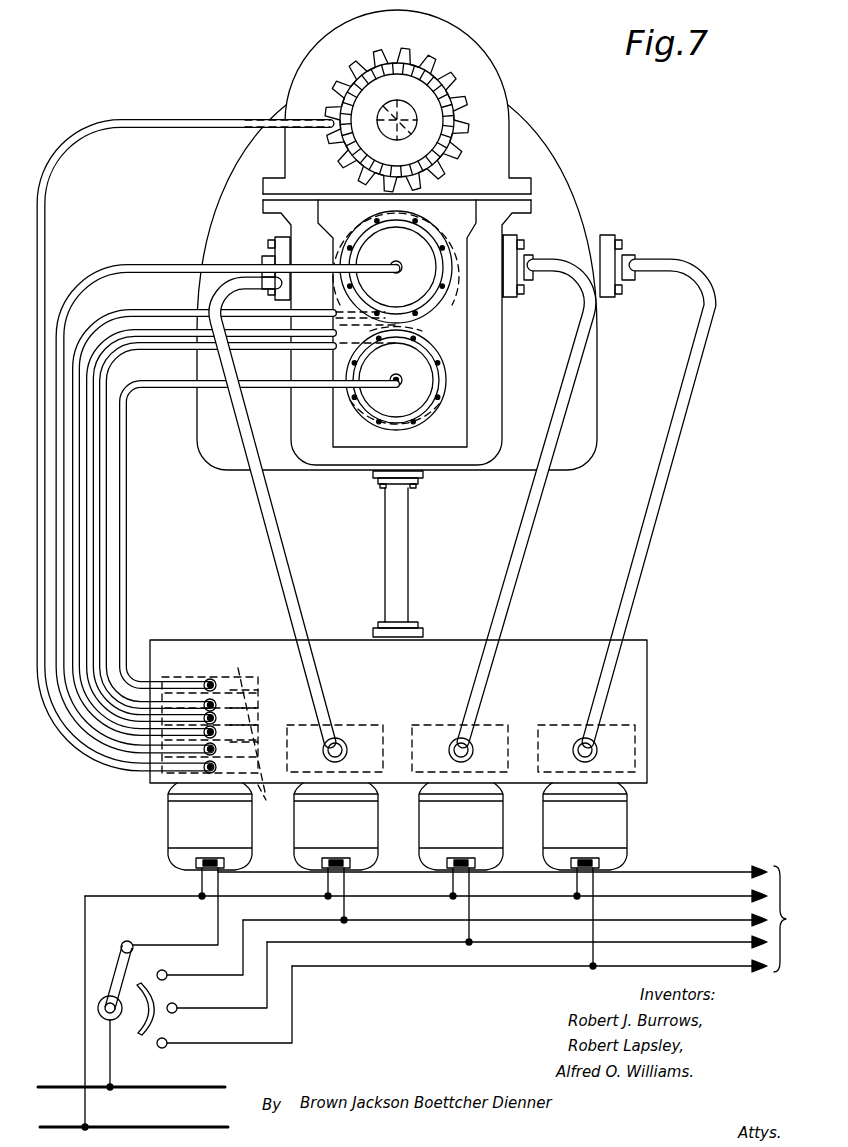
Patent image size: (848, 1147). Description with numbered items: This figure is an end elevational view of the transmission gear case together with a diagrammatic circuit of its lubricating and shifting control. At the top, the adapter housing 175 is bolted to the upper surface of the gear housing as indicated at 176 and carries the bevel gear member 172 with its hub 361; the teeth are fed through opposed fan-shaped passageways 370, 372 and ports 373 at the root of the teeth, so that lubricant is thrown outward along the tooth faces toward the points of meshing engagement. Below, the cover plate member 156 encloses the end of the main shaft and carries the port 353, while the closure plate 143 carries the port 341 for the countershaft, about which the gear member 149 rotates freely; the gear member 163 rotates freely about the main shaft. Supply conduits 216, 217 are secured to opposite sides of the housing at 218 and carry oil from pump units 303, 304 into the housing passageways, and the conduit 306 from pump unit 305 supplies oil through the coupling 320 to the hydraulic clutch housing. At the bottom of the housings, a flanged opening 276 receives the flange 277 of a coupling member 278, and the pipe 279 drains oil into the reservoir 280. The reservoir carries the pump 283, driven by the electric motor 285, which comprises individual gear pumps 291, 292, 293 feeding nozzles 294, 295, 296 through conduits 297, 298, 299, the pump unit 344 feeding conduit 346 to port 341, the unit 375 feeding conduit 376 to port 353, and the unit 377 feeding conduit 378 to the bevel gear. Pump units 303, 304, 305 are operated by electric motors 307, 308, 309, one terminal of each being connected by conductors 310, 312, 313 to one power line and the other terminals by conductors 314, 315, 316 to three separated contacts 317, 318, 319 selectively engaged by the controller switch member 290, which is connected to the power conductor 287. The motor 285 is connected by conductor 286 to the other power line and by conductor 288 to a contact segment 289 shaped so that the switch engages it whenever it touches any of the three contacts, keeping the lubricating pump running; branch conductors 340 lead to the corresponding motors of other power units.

The closure plate 143 is at (430, 382).
The gear member 149 is at (425, 335).
The cover plate member 156 is at (440, 255).
The gear member 163 is at (440, 322).
The bevel gear member 172 is at (410, 106).
The adapter housing 175 is at (315, 62).
The bolted securing location 176 is at (272, 182).
The supply conduit 216 is at (268, 520).
The supply conduit 217 is at (575, 334).
The conduit securing means 218 is at (268, 246).
The flanged opening 276 is at (372, 480).
The flange 277 is at (385, 485).
The coupling member 278 is at (410, 490).
The pipe 279 is at (385, 533).
The reservoir 280 is at (652, 695).
The pump 283 is at (190, 676).
The electric motor 285 is at (168, 830).
The conductor 286 is at (202, 886).
The conductor 287 is at (385, 618).
The conductor 288 is at (218, 928).
The contact segment 289 is at (136, 1042).
The controller switch member 290 is at (121, 950).
The individual oil pump 291 is at (255, 716).
The individual oil pump / power line 292 is at (255, 700).
The individual oil pump 293 is at (248, 686).
The nozzle 294 is at (340, 310).
The nozzle 295 is at (300, 330).
The nozzle 296 is at (320, 348).
The conduit 297 is at (78, 565).
The conduit 298 is at (92, 582).
The conduit 299 is at (107, 600).
The pump unit 303 is at (350, 733).
The pump unit 304 is at (440, 724).
The pump unit 305 is at (557, 730).
The conduit 306 is at (668, 388).
The electric motor 307 is at (308, 830).
The electric motor 308 is at (432, 830).
The electric motor 309 is at (556, 830).
The conductor 310 is at (328, 886).
The conductor 312 is at (453, 886).
The conductor 313 is at (577, 886).
The conductor 314 is at (344, 910).
The conductor 315 is at (469, 910).
The conductor 316 is at (593, 910).
The contact 317 is at (165, 971).
The contact 318 is at (176, 1004).
The contact 319 is at (168, 1040).
The coupling 320 is at (607, 297).
The branch conductors 340 is at (785, 919).
The port 341 is at (396, 380).
The oil pump unit 344 is at (241, 721).
The conduit 346 is at (128, 617).
The port 353 is at (396, 267).
The hub 361 is at (430, 105).
The fan-shaped passageway 370 is at (372, 173).
The fan-shaped passageway 372 is at (440, 86).
The ports 373 is at (362, 78).
The pump unit 375 is at (255, 735).
The conduit 376 is at (150, 257).
The pump unit 377 is at (272, 800).
The conduit 378 is at (45, 226).